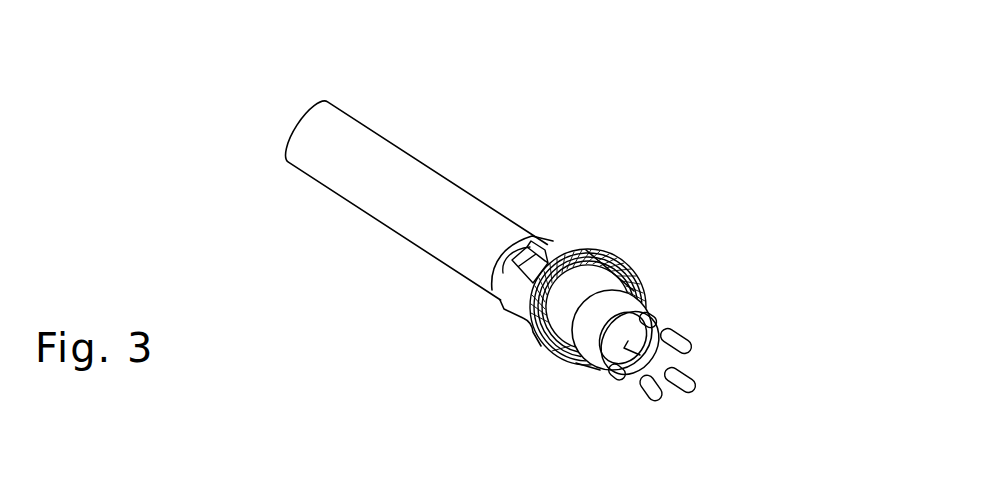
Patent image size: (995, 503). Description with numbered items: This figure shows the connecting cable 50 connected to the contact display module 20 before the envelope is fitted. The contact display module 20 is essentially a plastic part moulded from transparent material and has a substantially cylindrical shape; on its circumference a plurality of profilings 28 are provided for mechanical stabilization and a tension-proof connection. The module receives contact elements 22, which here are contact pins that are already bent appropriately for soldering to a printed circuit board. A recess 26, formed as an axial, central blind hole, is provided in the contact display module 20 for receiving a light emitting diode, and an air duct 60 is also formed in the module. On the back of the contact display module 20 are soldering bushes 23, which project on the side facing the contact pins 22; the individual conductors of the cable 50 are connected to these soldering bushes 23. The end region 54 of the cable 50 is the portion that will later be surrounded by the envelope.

The contact display module 20 is at (595, 263).
The contact elements 22 is at (690, 375).
The soldering bushes 23 is at (547, 252).
The recess 26 is at (635, 353).
The profilings 28 is at (623, 282).
The connecting cable 50 is at (335, 140).
The end region 54 is at (495, 242).
The air duct 60 is at (620, 342).